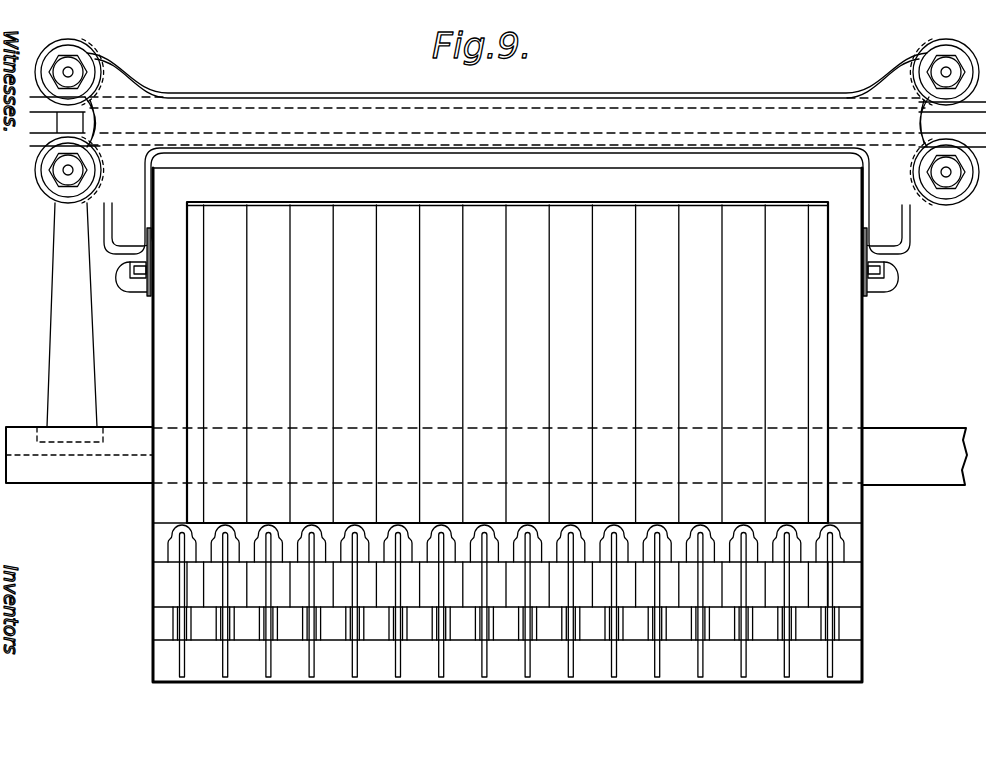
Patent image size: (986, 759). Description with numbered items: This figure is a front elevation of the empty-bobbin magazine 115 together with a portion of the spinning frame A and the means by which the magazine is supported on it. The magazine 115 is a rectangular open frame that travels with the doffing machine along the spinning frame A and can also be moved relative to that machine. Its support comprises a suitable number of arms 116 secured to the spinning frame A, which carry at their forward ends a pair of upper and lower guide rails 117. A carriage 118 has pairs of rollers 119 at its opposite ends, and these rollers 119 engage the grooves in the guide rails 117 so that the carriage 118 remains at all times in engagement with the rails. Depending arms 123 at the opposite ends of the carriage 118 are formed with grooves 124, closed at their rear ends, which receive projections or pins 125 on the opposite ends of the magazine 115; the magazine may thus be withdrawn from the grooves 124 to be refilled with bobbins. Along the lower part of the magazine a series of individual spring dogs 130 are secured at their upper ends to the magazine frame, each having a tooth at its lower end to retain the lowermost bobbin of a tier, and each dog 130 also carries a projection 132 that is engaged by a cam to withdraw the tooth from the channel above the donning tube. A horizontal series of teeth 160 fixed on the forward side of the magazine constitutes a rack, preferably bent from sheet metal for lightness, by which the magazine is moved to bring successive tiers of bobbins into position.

The magazine 115 is at (507, 362).
The arms 116 is at (68, 369).
The guide rails 117 is at (917, 120).
The carriage 118 is at (284, 103).
The rollers 119 is at (82, 52).
The depending arms 123 is at (118, 215).
The grooves 124 is at (118, 287).
The pins 125 is at (152, 270).
The spring dogs 130 is at (268, 592).
The projection 132 is at (523, 682).
The teeth 160 is at (312, 630).
The spinning frame A is at (70, 468).